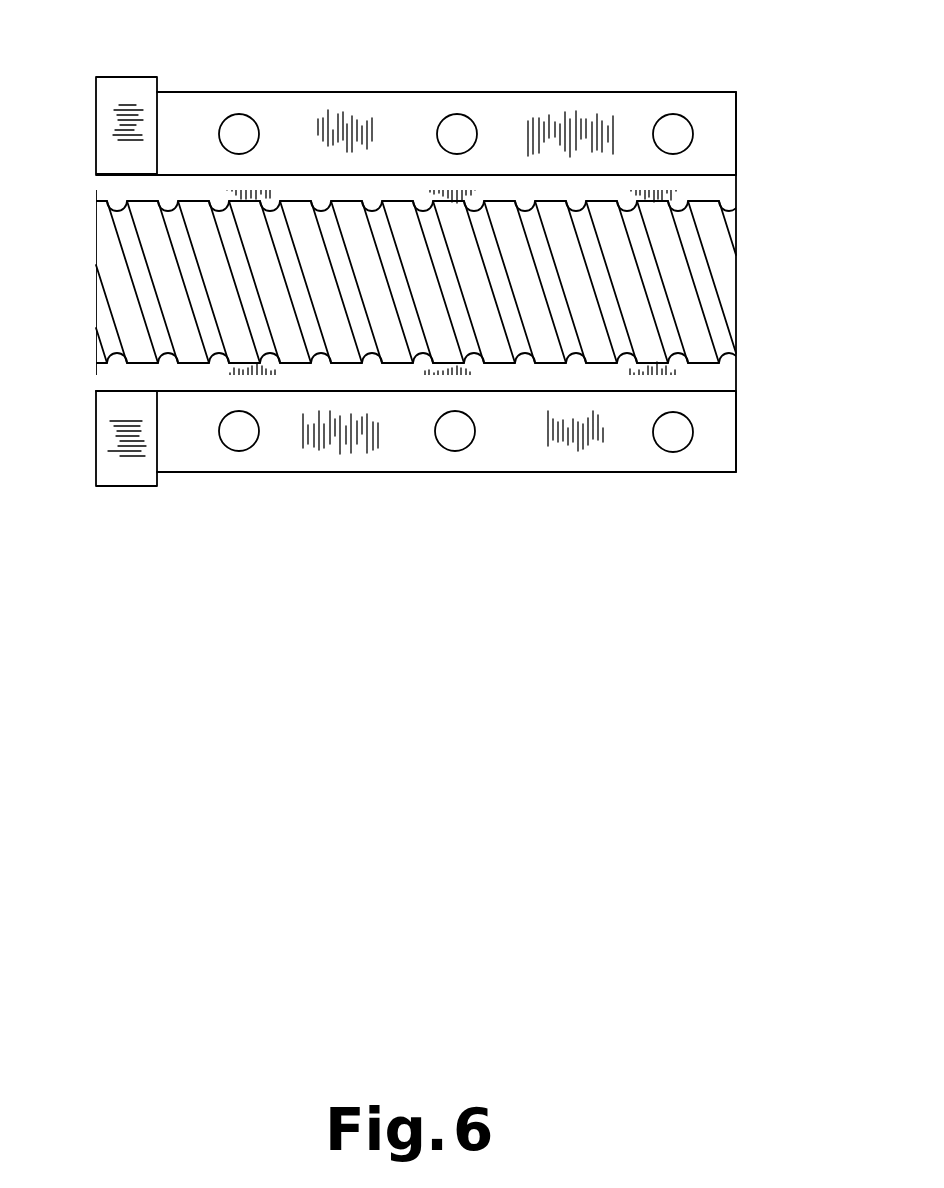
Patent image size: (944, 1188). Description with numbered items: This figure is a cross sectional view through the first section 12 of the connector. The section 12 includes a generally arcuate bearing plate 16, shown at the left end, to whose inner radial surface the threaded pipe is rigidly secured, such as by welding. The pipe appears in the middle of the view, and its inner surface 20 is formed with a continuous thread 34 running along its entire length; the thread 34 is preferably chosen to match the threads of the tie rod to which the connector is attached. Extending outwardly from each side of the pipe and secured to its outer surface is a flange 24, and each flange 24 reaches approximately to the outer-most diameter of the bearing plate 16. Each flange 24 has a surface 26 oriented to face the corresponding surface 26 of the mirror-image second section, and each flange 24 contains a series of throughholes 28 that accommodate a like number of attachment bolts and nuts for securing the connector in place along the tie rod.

The first section 12 is at (92, 123).
The bearing plate 16 is at (106, 480).
The inner surface 20 is at (445, 283).
The flange 24 is at (556, 92).
The surface 26 is at (728, 110).
The throughholes 28 is at (240, 118).
The continuous thread 34 is at (716, 297).